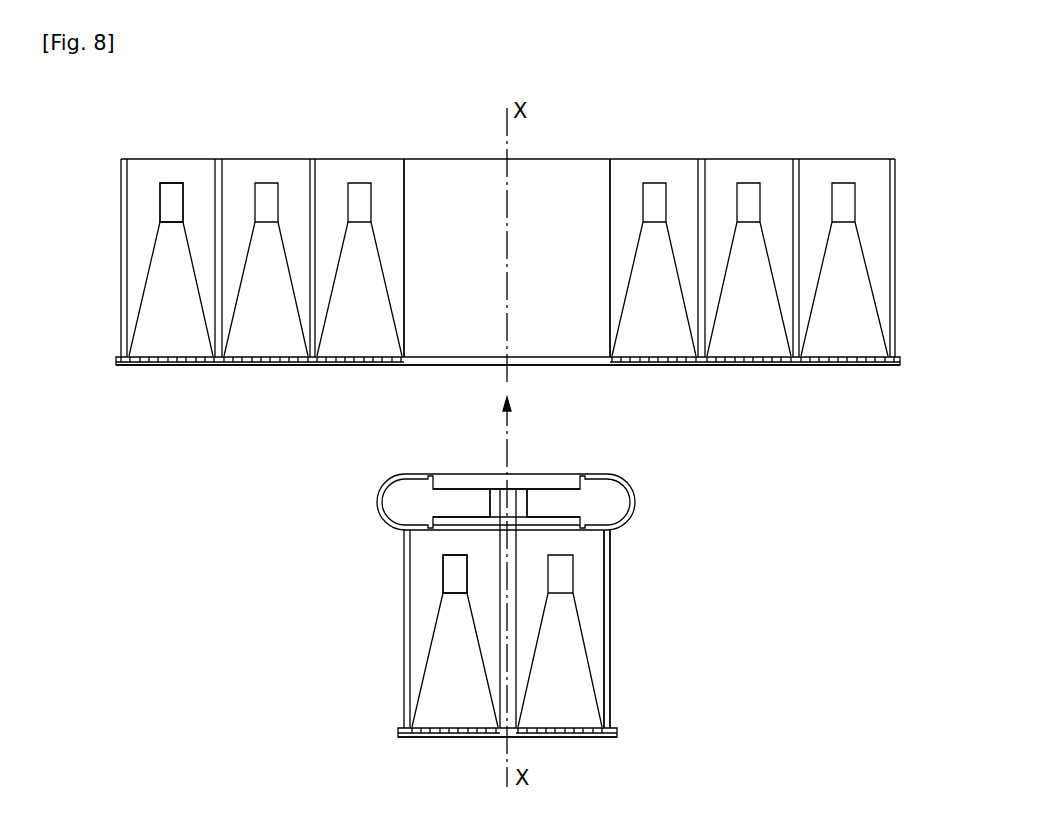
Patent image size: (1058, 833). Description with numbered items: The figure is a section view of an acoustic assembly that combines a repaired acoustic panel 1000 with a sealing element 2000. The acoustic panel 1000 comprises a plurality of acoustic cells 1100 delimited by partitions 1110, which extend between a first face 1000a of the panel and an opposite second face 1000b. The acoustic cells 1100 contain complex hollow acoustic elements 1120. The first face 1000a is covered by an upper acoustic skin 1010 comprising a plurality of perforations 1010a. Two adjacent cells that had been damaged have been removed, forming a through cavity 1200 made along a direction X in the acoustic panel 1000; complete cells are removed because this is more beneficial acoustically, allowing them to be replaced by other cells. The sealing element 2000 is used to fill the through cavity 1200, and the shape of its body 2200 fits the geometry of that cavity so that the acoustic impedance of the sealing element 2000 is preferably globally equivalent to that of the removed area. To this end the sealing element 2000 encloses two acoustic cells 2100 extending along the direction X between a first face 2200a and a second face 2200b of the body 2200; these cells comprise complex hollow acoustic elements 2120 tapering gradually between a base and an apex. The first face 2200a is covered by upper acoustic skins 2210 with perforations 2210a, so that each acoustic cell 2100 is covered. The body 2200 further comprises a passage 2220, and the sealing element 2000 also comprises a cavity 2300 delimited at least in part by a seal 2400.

The acoustic panel 1000 is at (912, 205).
The first face of the acoustic panel 1000a is at (868, 365).
The second face of the acoustic panel 1000b is at (796, 160).
The upper acoustic skin 1010 is at (172, 365).
The perforations 1010a is at (762, 365).
The acoustic cells 1100 is at (165, 170).
The partitions 1110 is at (308, 177).
The complex hollow acoustic elements 1120 is at (173, 274).
The through cavity 1200 is at (565, 180).
The sealing element 2000 is at (684, 692).
The acoustic cells of the sealing element 2100 is at (425, 578).
The complex hollow acoustic elements 2120 is at (455, 660).
The body 2200 is at (612, 601).
The first face of the body 2200a is at (537, 740).
The second face of the body 2200b is at (577, 537).
The upper acoustic skin 2210 is at (415, 740).
The perforations 2210a is at (592, 740).
The passage 2220 is at (513, 628).
The cavity 2300 is at (407, 503).
The seal 2400 is at (637, 501).